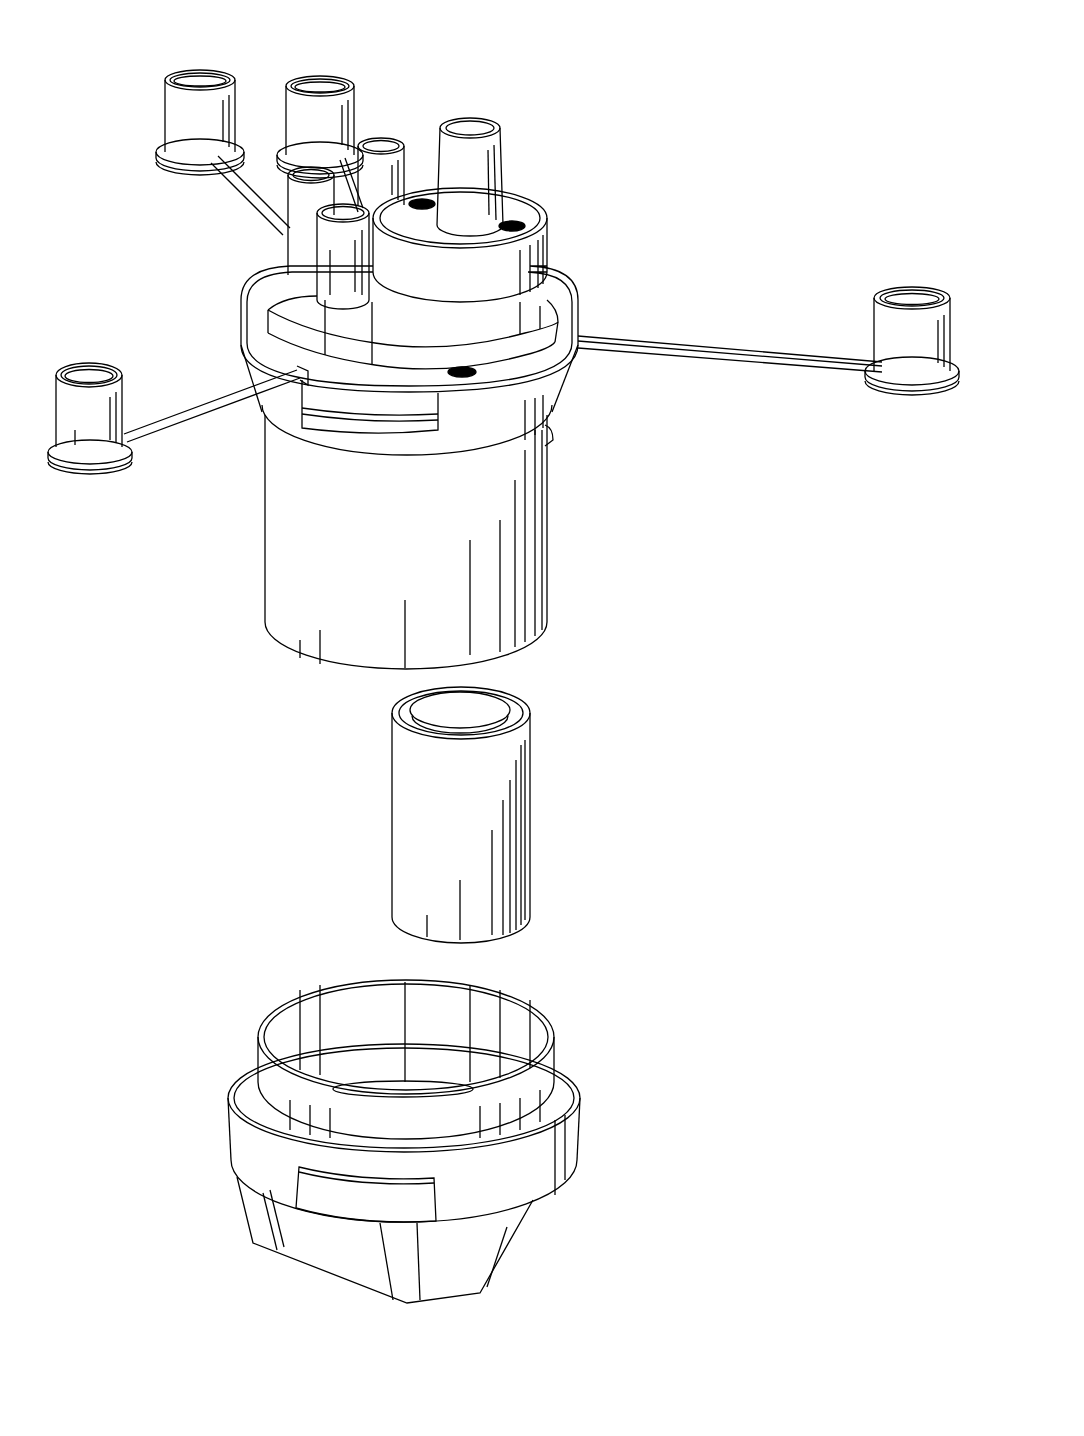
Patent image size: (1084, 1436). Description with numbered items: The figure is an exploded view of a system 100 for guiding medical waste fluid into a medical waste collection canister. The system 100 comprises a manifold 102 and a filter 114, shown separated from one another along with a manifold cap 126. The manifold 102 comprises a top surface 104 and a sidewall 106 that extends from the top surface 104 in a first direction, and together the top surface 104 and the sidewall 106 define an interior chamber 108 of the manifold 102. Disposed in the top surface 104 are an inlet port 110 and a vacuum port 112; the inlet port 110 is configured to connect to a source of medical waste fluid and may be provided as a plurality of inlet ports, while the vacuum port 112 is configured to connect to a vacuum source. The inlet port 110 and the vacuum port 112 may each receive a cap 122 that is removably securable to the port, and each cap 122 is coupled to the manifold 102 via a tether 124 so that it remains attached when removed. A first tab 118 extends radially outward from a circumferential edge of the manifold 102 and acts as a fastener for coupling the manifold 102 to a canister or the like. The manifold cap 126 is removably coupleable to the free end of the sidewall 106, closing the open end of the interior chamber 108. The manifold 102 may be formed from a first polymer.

The system 100 is at (843, 604).
The manifold 102 is at (627, 130).
The top surface 104 is at (212, 304).
The sidewall 106 is at (288, 552).
The interior chamber 108 is at (303, 691).
The inlet port 110 is at (381, 138).
The vacuum port 112 is at (492, 166).
The filter 114 is at (556, 697).
The first tab 118 is at (438, 428).
The cap 122 is at (199, 68).
The tether 124 is at (234, 186).
The manifold cap 126 is at (586, 1011).